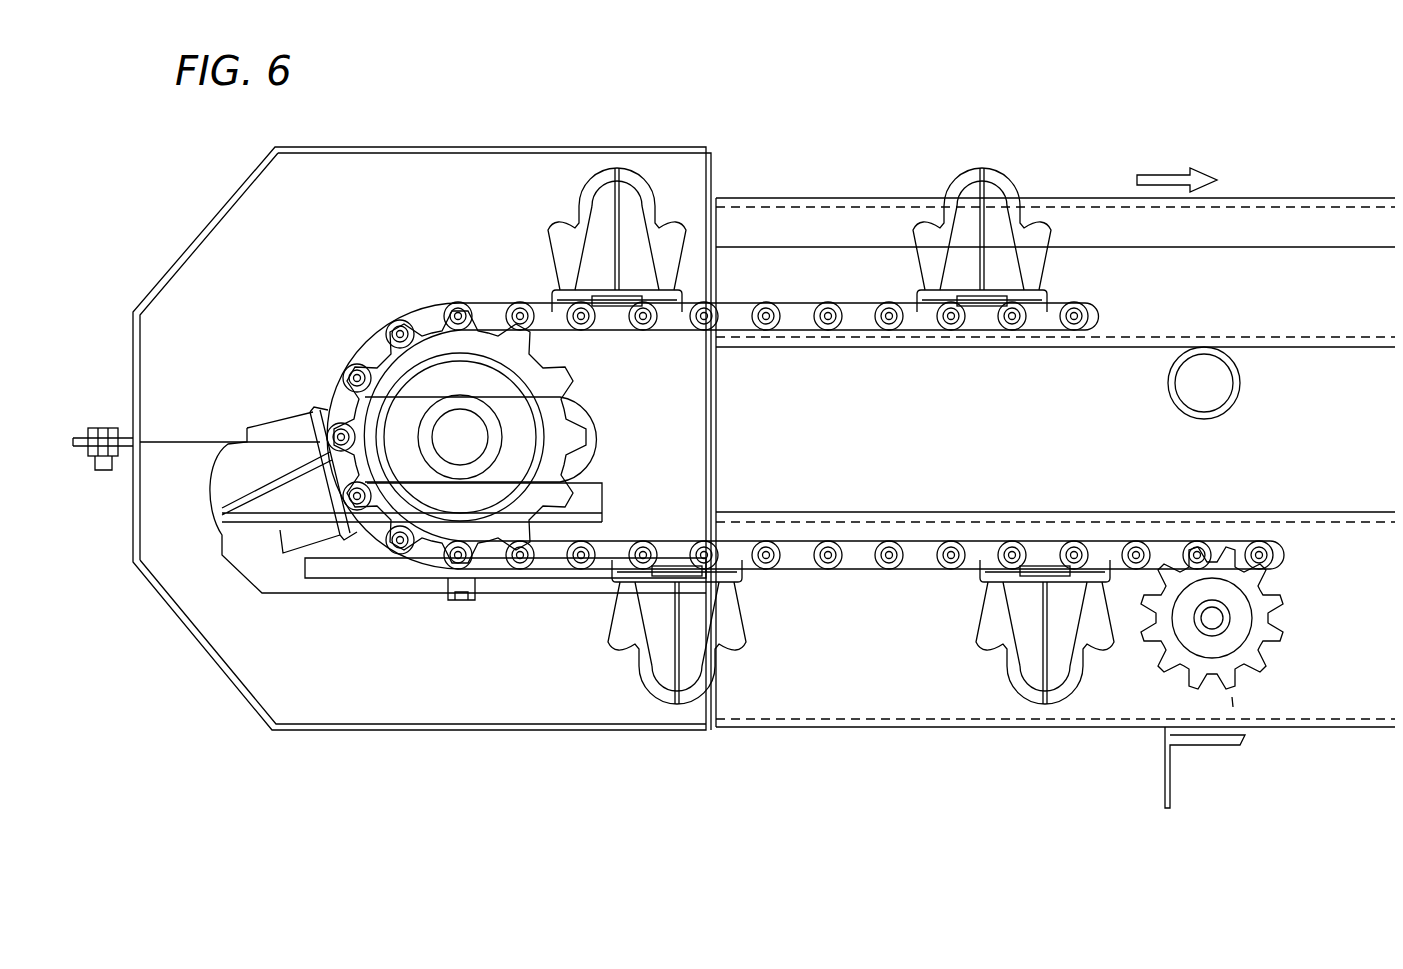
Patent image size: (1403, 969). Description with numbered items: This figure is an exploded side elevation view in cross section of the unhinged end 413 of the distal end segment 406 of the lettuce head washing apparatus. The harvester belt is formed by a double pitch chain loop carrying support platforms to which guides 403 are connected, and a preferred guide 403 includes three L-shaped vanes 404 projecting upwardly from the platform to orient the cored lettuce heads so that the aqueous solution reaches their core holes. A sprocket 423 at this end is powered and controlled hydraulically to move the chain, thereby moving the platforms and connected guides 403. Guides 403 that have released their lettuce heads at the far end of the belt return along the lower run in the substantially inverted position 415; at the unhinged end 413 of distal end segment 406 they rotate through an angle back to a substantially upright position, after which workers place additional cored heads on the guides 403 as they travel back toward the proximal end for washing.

The guide 403 is at (986, 152).
The L-shaped vane 404 is at (678, 210).
The unhinged end 413 is at (362, 320).
The sprocket 423 is at (352, 388).
The inverted position 415 is at (1000, 678).
The distal end segment 406 is at (1215, 748).